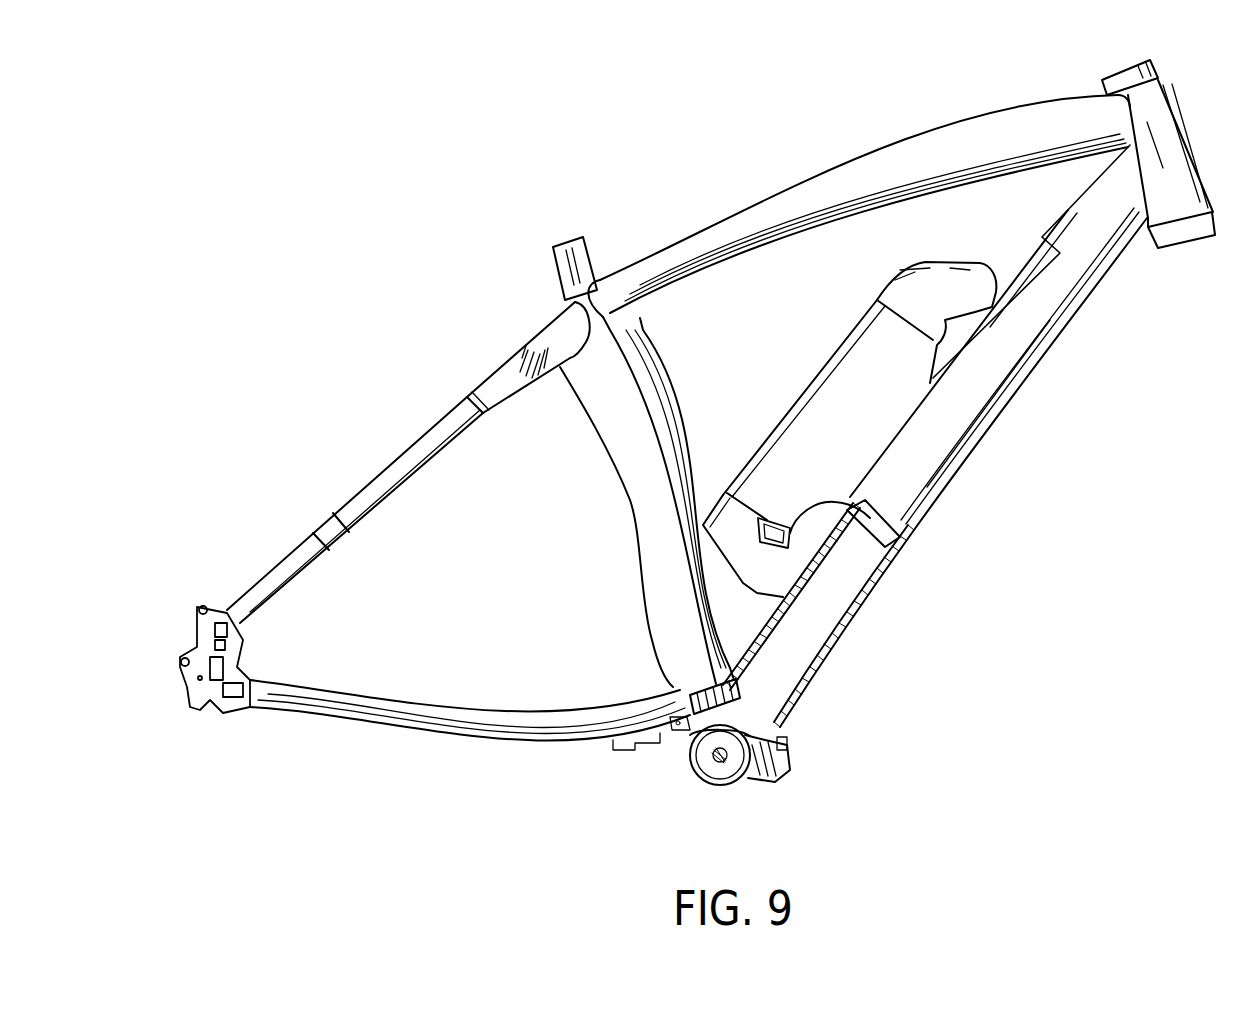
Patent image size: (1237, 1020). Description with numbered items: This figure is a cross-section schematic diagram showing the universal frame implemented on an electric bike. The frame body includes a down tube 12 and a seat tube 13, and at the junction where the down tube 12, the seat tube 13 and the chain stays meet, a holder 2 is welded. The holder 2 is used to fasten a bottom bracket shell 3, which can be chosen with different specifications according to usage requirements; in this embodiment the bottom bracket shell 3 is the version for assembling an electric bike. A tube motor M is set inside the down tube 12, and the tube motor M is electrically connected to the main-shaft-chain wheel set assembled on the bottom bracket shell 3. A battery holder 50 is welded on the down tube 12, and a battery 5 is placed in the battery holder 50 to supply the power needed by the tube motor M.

The holder 2 is at (690, 700).
The bottom bracket shell 3 is at (752, 780).
The battery 5 is at (793, 393).
The down tube 12 is at (960, 473).
The seat tube 13 is at (637, 487).
The battery holder 50 is at (807, 537).
The tube motor M is at (813, 637).